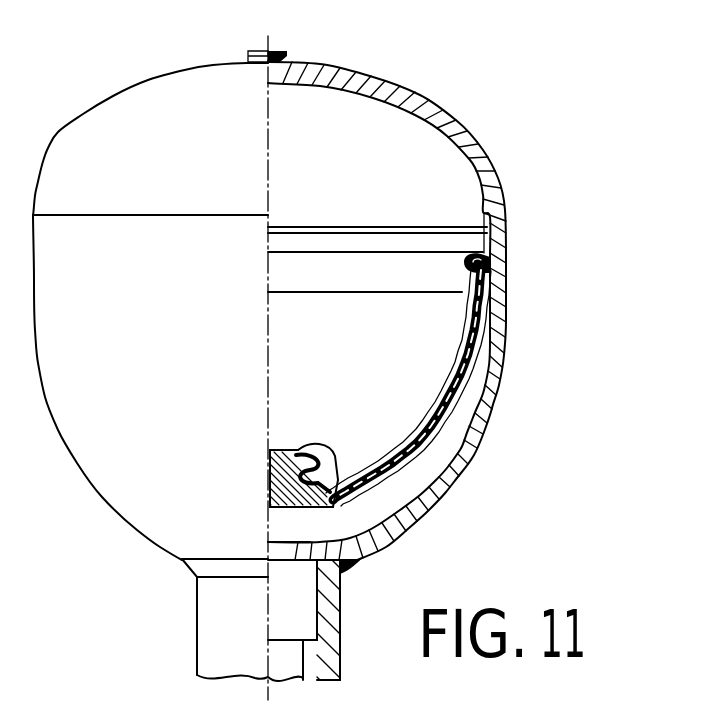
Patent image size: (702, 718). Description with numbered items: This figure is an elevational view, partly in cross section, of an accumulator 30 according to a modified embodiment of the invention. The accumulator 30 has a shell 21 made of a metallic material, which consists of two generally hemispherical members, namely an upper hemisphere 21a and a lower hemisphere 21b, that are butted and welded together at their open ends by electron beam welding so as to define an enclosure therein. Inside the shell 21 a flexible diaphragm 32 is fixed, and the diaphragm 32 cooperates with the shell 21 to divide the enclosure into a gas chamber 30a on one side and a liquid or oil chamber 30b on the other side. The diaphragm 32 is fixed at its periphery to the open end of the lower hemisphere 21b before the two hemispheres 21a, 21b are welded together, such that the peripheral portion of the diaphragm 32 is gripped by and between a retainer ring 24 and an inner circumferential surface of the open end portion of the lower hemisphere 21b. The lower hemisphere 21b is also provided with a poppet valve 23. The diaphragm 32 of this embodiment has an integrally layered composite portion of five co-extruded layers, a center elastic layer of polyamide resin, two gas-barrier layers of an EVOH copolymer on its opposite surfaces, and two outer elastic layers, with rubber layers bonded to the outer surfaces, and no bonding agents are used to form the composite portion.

The accumulator 30 is at (299, 351).
The gas chamber 30a is at (355, 110).
The liquid or oil chamber 30b is at (425, 473).
The shell 21 is at (459, 231).
The upper hemisphere 21a is at (496, 193).
The lower hemisphere 21b is at (497, 270).
The retainer ring 24 is at (467, 268).
The flexible diaphragm 32 is at (457, 392).
The poppet valve 23 is at (277, 492).